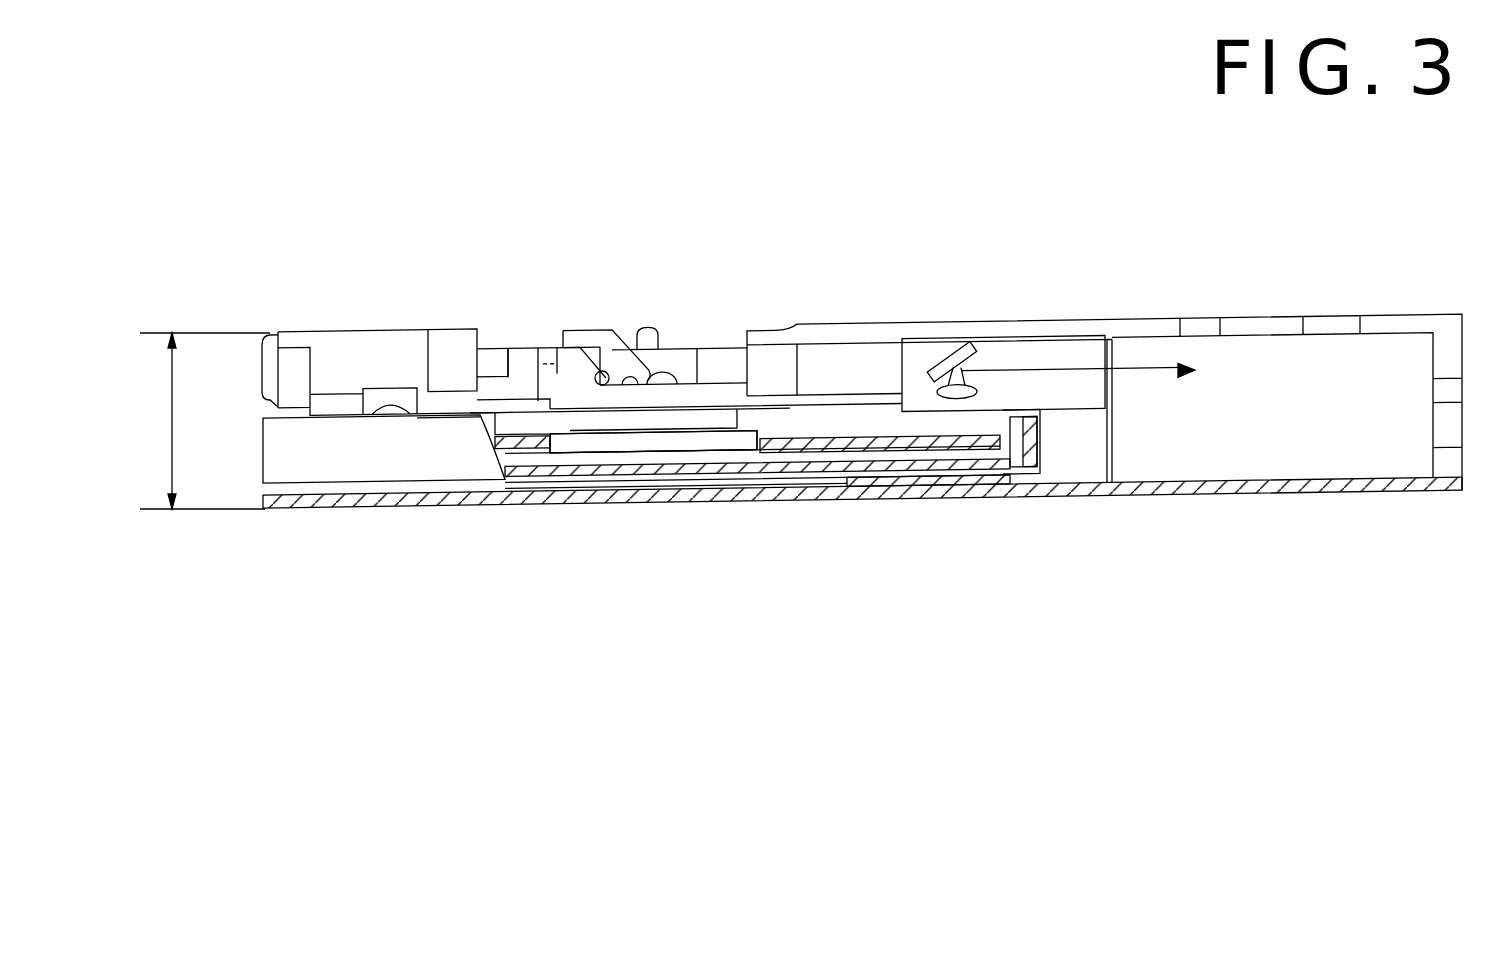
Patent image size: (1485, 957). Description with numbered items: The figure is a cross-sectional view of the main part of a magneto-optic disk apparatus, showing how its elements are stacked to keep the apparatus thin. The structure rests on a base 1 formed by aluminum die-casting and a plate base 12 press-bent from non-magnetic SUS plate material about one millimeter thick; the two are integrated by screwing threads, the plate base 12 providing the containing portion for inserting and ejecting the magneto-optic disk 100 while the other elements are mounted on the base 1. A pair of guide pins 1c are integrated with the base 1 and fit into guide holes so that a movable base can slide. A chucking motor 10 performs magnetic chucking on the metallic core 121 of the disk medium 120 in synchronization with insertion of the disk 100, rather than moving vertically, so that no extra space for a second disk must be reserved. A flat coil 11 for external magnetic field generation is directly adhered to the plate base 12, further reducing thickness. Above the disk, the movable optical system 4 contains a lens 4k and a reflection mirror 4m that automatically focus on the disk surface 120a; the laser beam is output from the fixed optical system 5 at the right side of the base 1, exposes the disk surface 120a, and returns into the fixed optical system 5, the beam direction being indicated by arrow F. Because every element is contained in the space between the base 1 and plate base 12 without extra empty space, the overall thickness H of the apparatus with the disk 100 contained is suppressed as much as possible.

The base 1 is at (372, 345).
The guide pins 1c is at (647, 328).
The chucking motor 10 is at (682, 412).
The disk medium 120 is at (753, 447).
The disk surface 120a is at (843, 436).
The metallic core 121 is at (612, 445).
The magneto-optic disk 100 is at (836, 480).
The flat coil 11 is at (921, 487).
The plate base 12 is at (1034, 488).
The movable optical system 4 is at (1017, 364).
The reflection mirror 4m is at (945, 368).
The lens 4k is at (979, 393).
The fixed optical system 5 is at (1247, 390).
The light beam direction F is at (1142, 342).
The thickness H is at (195, 421).